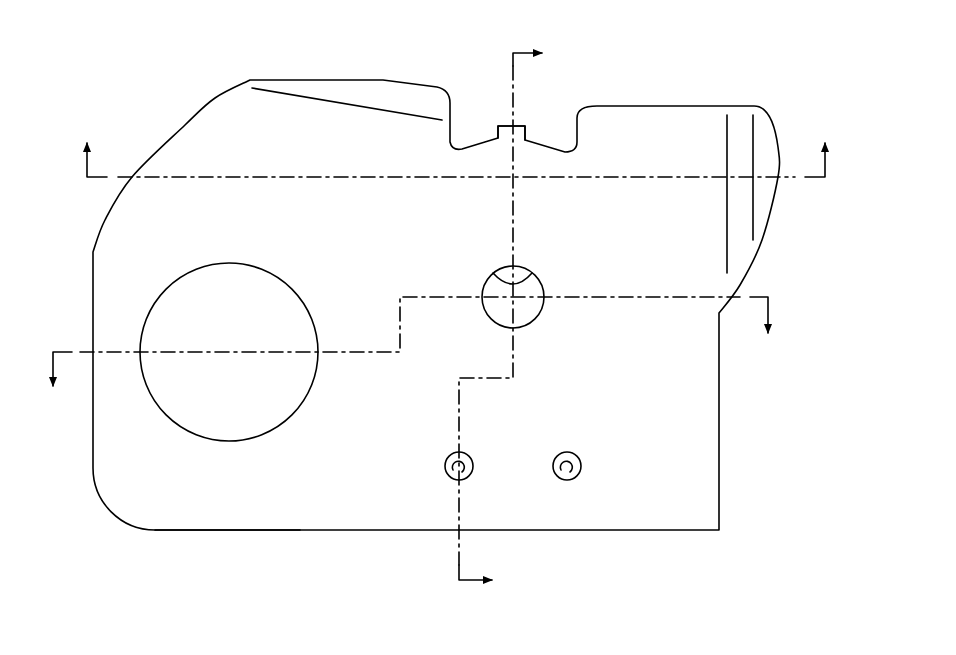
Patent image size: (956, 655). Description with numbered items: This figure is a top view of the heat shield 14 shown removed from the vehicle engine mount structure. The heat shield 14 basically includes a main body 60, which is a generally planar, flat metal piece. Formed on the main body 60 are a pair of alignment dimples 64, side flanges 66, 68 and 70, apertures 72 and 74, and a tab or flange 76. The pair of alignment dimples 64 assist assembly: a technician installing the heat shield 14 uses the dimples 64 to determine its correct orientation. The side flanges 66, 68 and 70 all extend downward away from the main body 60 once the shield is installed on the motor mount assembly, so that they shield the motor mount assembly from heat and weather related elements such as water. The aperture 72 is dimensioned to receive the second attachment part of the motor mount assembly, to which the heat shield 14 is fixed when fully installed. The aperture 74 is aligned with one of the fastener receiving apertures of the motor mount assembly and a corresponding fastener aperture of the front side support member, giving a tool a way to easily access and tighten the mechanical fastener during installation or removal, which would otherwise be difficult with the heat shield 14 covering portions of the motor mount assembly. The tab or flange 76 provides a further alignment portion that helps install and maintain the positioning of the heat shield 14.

The heat shield 14 is at (672, 60).
The main body 60 is at (680, 424).
The alignment dimples 64 is at (560, 478).
The side flange 66 is at (265, 531).
The side flange 68 is at (765, 147).
The side flange 70 is at (357, 92).
The aperture 72 is at (533, 277).
The aperture 74 is at (182, 277).
The tab or flange 76 is at (499, 134).